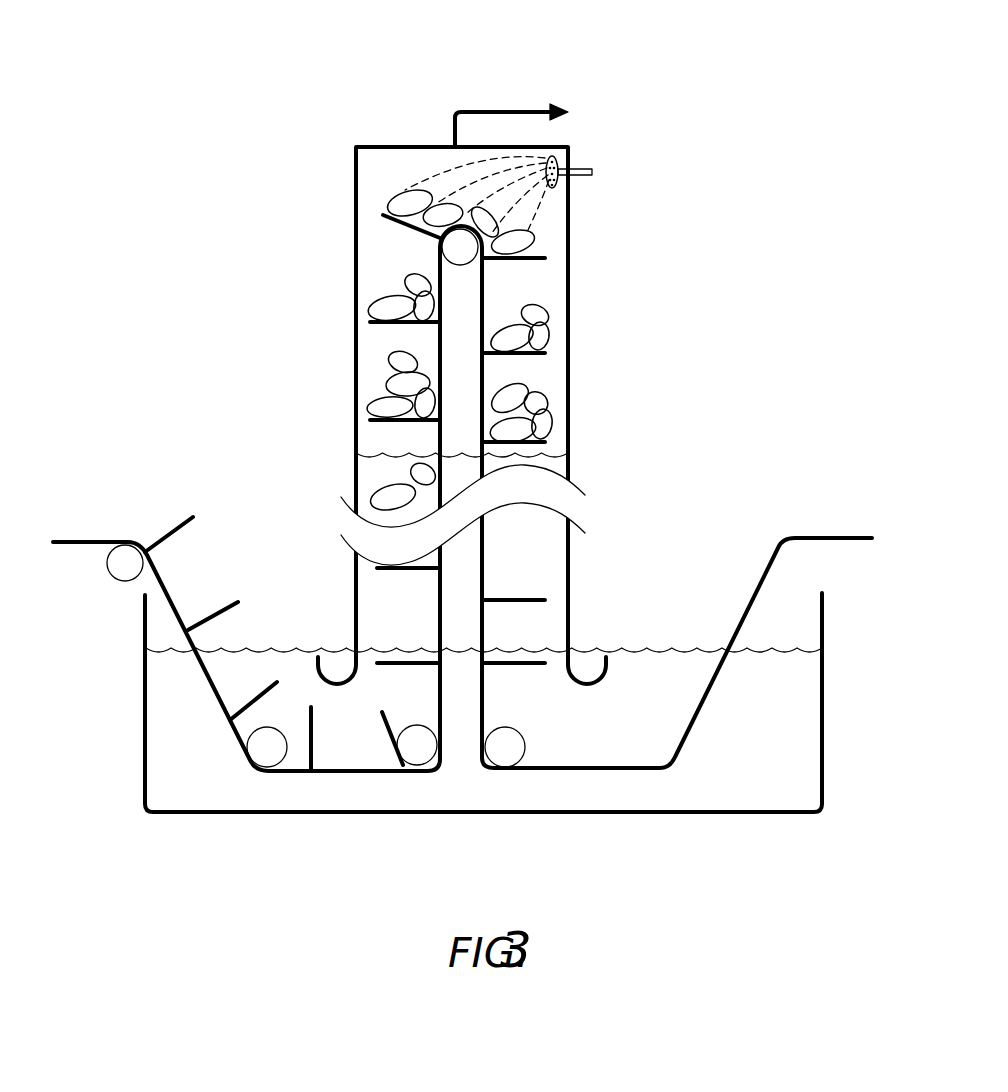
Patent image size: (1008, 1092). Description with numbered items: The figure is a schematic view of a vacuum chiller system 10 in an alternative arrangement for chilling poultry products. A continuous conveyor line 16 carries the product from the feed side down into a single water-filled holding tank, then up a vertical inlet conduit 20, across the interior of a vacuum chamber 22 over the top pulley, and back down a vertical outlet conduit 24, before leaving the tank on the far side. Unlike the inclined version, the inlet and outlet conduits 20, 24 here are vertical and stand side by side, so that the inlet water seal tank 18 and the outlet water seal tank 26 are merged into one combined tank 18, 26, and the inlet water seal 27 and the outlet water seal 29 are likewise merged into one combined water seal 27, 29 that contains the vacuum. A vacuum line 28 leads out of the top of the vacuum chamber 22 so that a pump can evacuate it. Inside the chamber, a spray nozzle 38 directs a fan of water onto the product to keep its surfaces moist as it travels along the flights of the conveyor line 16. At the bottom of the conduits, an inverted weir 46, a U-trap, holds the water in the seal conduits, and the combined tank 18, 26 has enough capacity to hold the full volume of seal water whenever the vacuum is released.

The vacuum chiller system 10 is at (385, 345).
The conveyor line 16 is at (92, 503).
The inlet water seal tank 18 is at (483, 773).
The outlet water seal tank 26 is at (305, 835).
The inlet conduit 20 is at (321, 423).
The vacuum chamber 22 is at (328, 177).
The outlet conduit 24 is at (597, 390).
The inlet water seal 27 is at (614, 567).
The outlet water seal 29 is at (565, 567).
The vacuum line 28 is at (517, 108).
The spray nozzle 38 is at (587, 170).
The inverted weir 46 is at (578, 670).